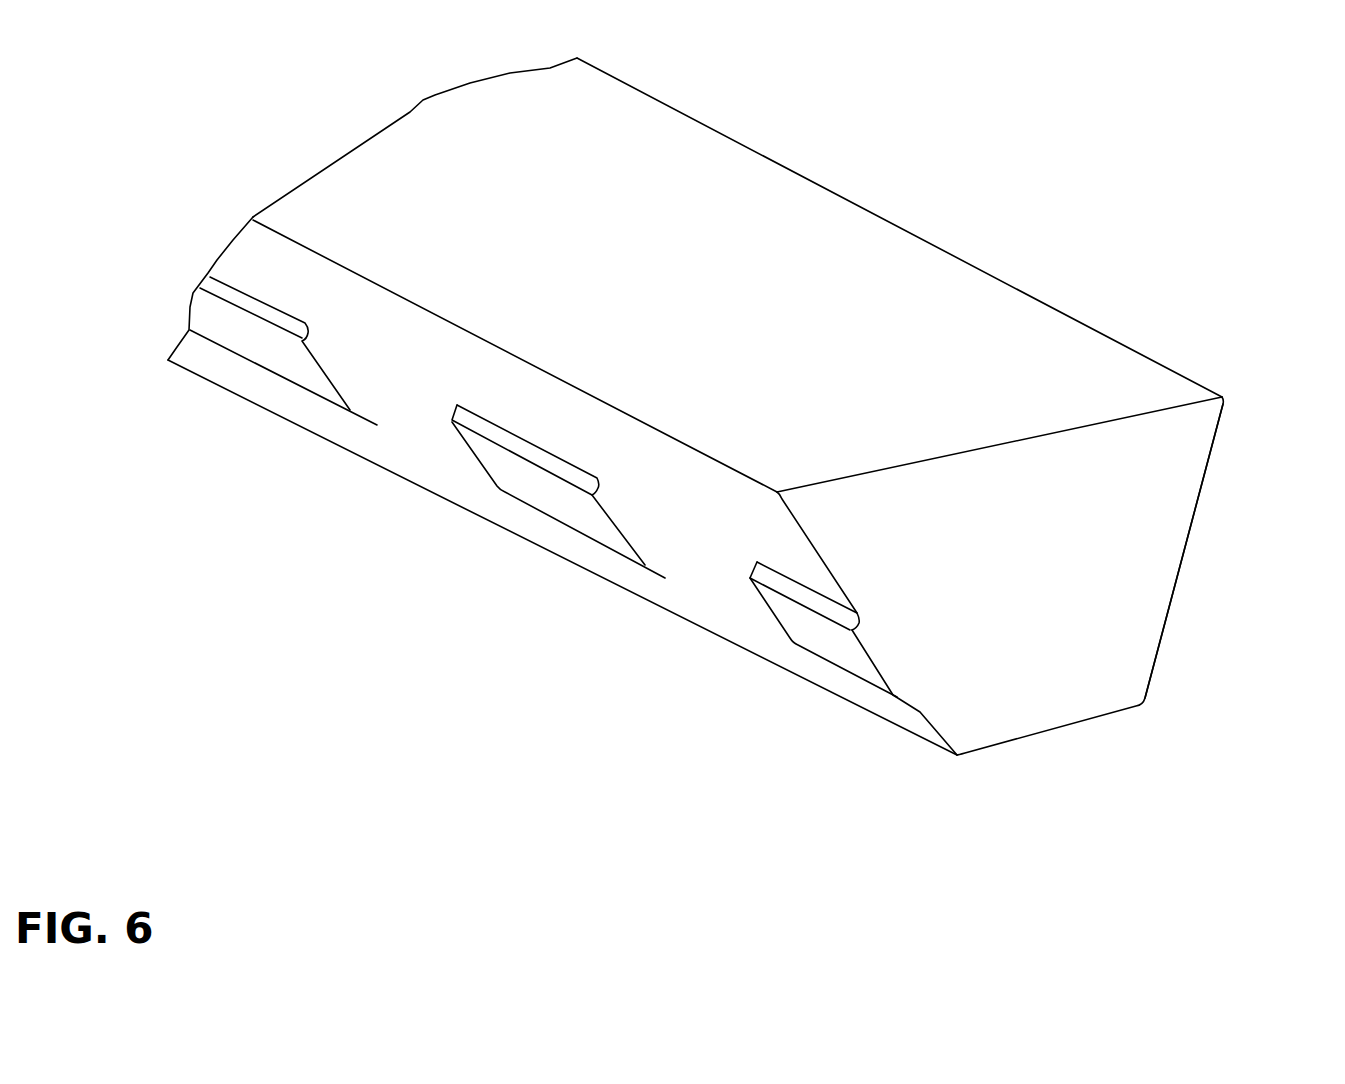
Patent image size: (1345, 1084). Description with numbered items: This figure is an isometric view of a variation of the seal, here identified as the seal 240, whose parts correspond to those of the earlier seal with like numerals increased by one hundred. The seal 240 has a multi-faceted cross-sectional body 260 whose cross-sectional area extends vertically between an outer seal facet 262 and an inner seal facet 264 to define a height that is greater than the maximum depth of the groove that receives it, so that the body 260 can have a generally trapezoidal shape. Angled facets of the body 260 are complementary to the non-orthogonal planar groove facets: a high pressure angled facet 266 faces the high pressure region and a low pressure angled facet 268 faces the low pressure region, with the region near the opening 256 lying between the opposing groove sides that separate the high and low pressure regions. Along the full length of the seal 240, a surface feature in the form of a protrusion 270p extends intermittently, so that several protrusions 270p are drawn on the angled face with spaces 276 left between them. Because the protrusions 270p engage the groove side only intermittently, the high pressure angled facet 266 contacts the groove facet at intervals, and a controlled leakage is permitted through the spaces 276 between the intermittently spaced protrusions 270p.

The seal 240 is at (970, 365).
The opening 256 is at (1122, 507).
The multi-faceted cross-sectional body 260 is at (1038, 566).
The outer seal facet 262 is at (722, 310).
The inner seal facet 264 is at (1038, 740).
The high pressure angled facet 266 is at (410, 356).
The low pressure angled facet 268 is at (1185, 547).
The protrusion 270p is at (813, 630).
The spaces 276 is at (648, 498).